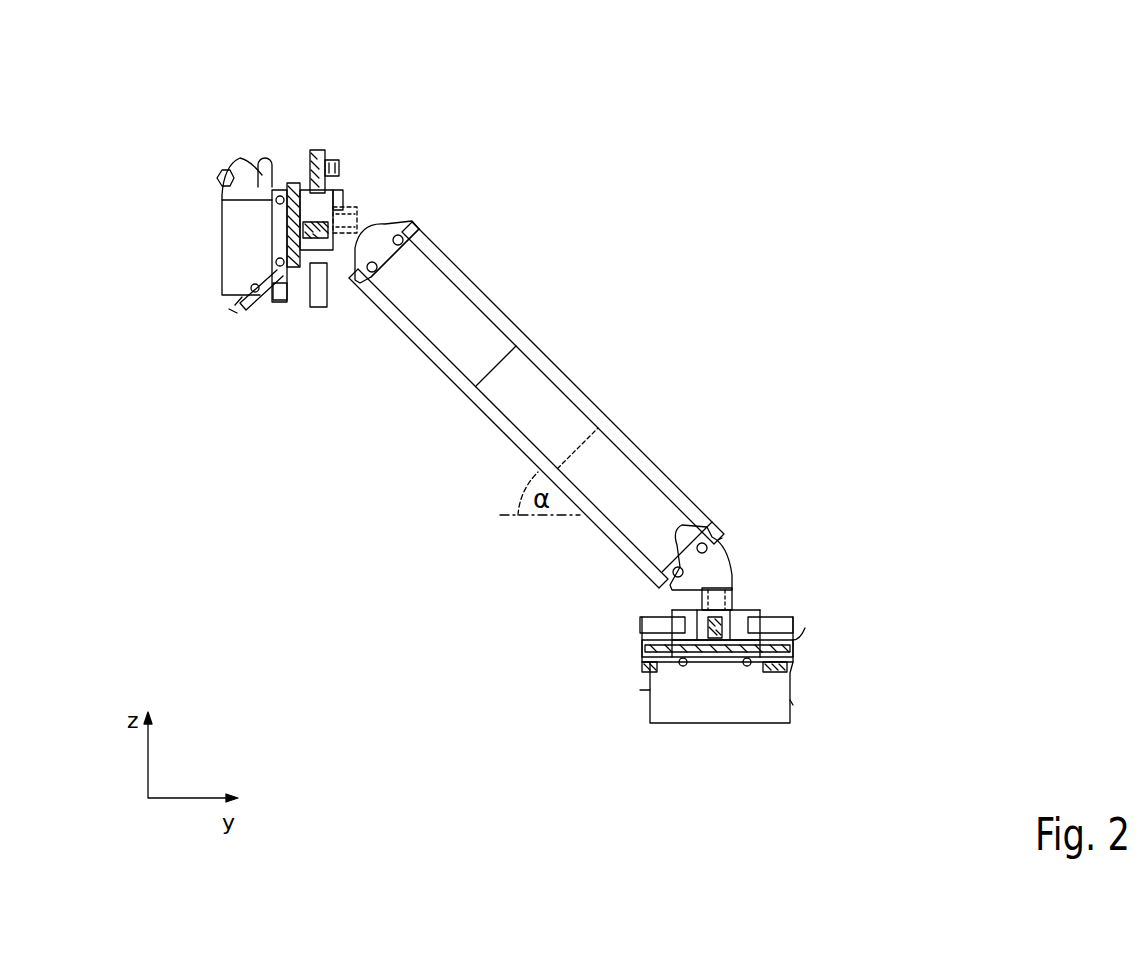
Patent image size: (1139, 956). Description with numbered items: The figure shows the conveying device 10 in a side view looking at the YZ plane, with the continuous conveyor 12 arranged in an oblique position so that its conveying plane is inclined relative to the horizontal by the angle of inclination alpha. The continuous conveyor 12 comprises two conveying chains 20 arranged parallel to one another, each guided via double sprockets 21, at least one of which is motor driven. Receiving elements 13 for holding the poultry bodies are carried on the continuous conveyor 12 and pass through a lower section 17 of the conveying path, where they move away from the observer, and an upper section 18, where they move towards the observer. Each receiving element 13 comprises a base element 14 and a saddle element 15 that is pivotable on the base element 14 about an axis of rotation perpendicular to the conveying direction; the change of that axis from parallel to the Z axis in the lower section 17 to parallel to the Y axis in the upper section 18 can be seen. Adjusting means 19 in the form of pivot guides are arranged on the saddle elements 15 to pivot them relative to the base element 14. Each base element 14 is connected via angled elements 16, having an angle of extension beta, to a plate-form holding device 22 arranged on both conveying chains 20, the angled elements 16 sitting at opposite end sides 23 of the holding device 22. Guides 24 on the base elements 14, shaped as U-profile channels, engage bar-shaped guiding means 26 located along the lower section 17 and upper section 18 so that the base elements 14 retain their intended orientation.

The conveying device 10 is at (692, 226).
The continuous conveyor 12 is at (742, 520).
The receiving elements 13 is at (185, 243).
The base element 14 is at (340, 195).
The saddle element 15 is at (230, 268).
The angled elements 16 is at (375, 235).
The lower section 17 is at (605, 633).
The upper section 18 is at (277, 138).
The adjusting means 19 is at (340, 130).
The conveying chains 20 is at (470, 275).
The double sprockets 21 is at (553, 392).
The holding devices 22 is at (398, 228).
The end sides 23 is at (357, 300).
The guides 24 is at (302, 240).
The guiding means 26 is at (322, 158).